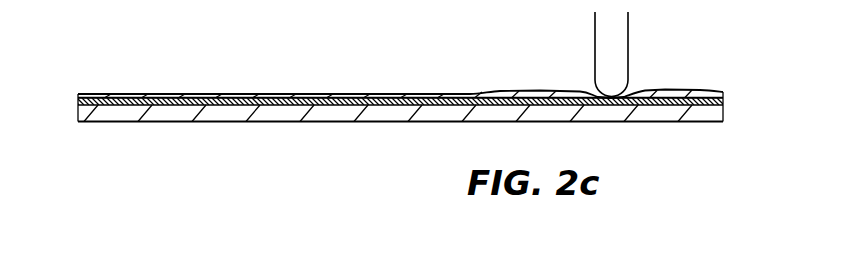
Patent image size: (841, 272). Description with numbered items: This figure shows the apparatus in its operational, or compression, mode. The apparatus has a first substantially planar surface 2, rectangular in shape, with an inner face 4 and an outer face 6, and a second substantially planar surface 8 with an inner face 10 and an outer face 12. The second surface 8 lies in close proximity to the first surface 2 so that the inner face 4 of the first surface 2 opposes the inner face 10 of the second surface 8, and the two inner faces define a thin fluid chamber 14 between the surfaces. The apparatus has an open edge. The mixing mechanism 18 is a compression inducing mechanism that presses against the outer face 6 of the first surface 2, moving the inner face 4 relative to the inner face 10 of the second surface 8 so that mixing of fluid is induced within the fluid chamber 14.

The first surface 2 is at (709, 82).
The inner face of the first surface 4 is at (673, 110).
The outer face of the first surface 6 is at (661, 81).
The second surface 8 is at (151, 130).
The inner face of the second surface 10 is at (232, 116).
The outer face of the second surface 12 is at (370, 132).
The fluid chamber 14 is at (539, 105).
The mixing mechanism 18 is at (595, 52).